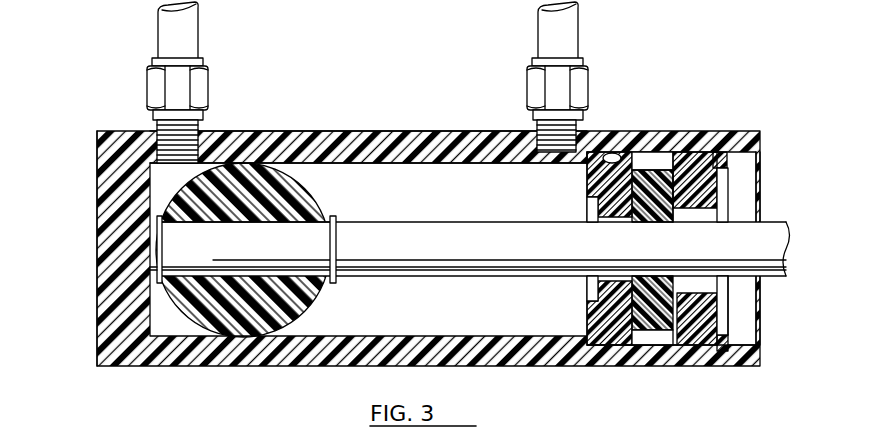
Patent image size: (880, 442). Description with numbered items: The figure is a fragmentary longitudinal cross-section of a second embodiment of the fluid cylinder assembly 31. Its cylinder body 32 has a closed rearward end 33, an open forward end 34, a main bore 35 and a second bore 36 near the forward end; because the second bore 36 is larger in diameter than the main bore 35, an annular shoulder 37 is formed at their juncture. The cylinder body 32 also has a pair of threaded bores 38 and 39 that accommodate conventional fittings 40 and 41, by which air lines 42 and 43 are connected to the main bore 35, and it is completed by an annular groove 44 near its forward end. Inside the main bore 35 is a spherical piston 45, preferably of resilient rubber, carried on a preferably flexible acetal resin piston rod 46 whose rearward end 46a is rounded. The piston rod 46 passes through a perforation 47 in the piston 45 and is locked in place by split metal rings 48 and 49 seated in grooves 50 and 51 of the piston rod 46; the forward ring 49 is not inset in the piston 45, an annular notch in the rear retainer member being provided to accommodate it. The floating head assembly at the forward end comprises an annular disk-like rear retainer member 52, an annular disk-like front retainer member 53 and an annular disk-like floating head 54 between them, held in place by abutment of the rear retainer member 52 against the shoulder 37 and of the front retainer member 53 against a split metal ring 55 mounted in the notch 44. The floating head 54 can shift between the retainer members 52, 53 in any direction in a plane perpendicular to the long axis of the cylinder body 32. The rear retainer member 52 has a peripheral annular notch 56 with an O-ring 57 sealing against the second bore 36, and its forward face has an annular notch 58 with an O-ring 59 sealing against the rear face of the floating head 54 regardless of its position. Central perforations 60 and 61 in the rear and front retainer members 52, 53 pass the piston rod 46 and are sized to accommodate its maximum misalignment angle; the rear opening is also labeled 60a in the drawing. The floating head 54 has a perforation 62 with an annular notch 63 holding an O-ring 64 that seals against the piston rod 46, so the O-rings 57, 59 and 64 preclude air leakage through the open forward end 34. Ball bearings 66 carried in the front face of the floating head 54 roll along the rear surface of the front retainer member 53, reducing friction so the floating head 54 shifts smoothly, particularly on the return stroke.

The cylinder assembly 31 is at (340, 128).
The cylinder body 32 is at (428, 137).
The closed rearward end 33 is at (110, 212).
The open forward end 34 is at (760, 192).
The main bore 35 is at (450, 165).
The second bore 36 is at (757, 162).
The annular shoulder 37 is at (586, 150).
The threaded bore 38 is at (524, 148).
The threaded bore 39 is at (196, 131).
The fitting 40 is at (530, 80).
The fitting 41 is at (200, 83).
The air line 42 is at (546, 30).
The air line 43 is at (190, 32).
The annular groove 44 is at (722, 151).
The piston 45 is at (316, 183).
The piston rod 46 is at (442, 277).
The rearward end 46a is at (153, 256).
The perforation 47 is at (258, 224).
The split metal ring 48 is at (163, 239).
The split metal ring 49 is at (337, 239).
The groove 50 is at (164, 263).
The groove 51 is at (337, 264).
The rear retainer member 52 is at (590, 318).
The front retainer member 53 is at (695, 366).
The floating head 54 is at (662, 366).
The split metal ring 55 is at (723, 326).
The peripheral annular notch 56 is at (621, 157).
The O-ring 57 is at (611, 150).
The annular notch 58 is at (592, 366).
The O-ring 59 is at (618, 366).
The central perforation 60 is at (588, 211).
The ring 60a is at (591, 295).
The central perforation 61 is at (721, 286).
The perforation 62 is at (690, 276).
The annular notch 63 is at (641, 223).
The O-ring 64 is at (665, 223).
The ball bearings 66 is at (690, 151).